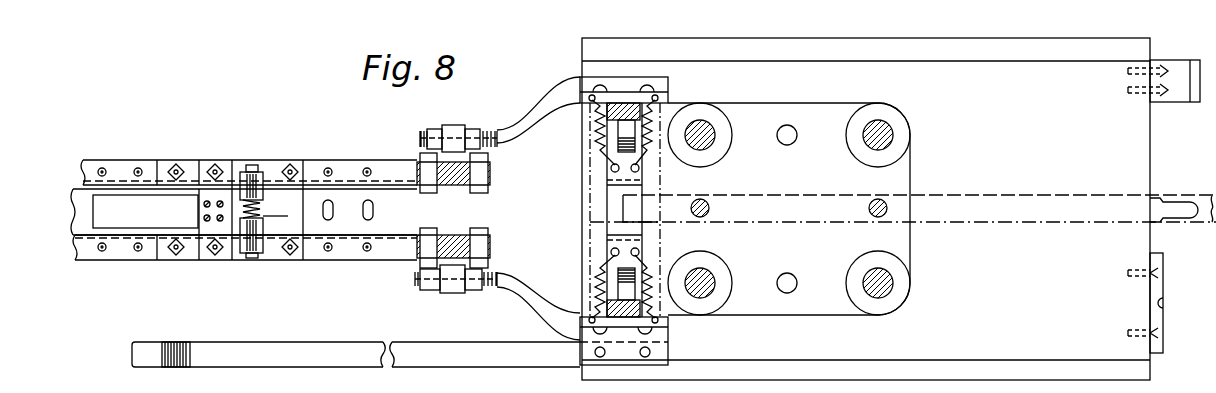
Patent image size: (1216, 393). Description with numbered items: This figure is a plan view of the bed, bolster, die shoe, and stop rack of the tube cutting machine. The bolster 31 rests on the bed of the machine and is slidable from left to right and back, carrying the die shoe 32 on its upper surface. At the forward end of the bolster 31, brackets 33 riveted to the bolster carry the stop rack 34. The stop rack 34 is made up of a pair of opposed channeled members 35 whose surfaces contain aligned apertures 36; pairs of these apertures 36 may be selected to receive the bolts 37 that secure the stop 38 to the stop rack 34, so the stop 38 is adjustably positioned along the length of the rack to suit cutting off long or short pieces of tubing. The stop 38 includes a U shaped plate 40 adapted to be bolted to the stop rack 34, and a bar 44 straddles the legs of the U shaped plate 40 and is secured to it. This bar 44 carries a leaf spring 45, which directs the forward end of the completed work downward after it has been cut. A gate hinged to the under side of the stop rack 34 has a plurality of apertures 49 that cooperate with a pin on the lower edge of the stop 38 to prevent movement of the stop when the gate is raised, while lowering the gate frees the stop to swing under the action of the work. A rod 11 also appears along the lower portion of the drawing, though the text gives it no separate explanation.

The rod 11 is at (356, 367).
The bolster 31 is at (903, 50).
The die shoe 32 is at (818, 110).
The brackets 33 is at (531, 108).
The stop rack 34 is at (255, 101).
The channeled members 35 is at (350, 165).
The apertures 36 is at (140, 169).
The bolts 37 is at (292, 168).
The stop 38 is at (262, 200).
The U shaped plate 40 is at (162, 167).
The bar 44 is at (210, 163).
The leaf spring 45 is at (180, 208).
The apertures 49 is at (374, 212).